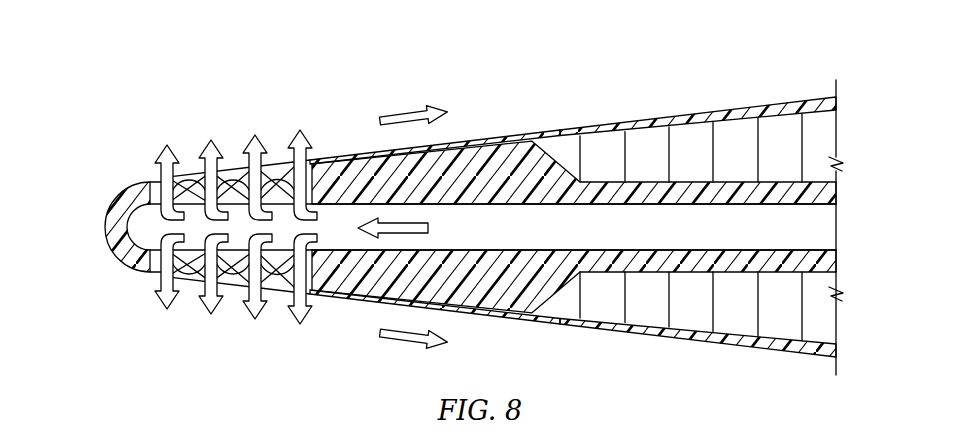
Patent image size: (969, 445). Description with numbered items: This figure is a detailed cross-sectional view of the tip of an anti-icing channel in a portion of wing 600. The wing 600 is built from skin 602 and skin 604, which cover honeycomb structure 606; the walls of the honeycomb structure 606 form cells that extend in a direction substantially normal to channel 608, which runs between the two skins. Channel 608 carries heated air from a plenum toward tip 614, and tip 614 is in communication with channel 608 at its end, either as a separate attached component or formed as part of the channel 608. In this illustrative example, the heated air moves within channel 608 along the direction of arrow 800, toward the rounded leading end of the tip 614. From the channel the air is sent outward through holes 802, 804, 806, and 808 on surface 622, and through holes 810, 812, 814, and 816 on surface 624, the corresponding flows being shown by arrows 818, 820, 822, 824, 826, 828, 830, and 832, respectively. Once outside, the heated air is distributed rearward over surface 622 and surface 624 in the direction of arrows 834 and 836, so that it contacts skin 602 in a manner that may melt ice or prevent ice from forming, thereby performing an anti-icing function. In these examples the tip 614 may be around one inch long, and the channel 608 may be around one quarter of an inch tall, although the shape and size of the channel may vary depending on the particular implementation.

The wing 600 is at (446, 199).
The skin 602 is at (597, 127).
The skin 604 is at (596, 328).
The honeycomb structure 606 is at (768, 128).
The channel 608 is at (583, 234).
The tip 614 is at (107, 238).
The surface 622 is at (329, 159).
The surface 624 is at (330, 296).
The arrow 800 is at (432, 225).
The hole 802 is at (148, 183).
The hole 804 is at (180, 172).
The hole 806 is at (224, 171).
The hole 808 is at (268, 171).
The hole 810 is at (155, 273).
The hole 812 is at (185, 282).
The hole 814 is at (221, 278).
The hole 816 is at (272, 278).
The arrow 818 is at (157, 150).
The arrow 820 is at (201, 165).
The arrow 822 is at (257, 133).
The arrow 824 is at (301, 128).
The arrow 826 is at (160, 300).
The arrow 828 is at (200, 318).
The arrow 830 is at (256, 322).
The arrow 832 is at (302, 327).
The arrow 834 is at (402, 104).
The arrow 836 is at (401, 352).